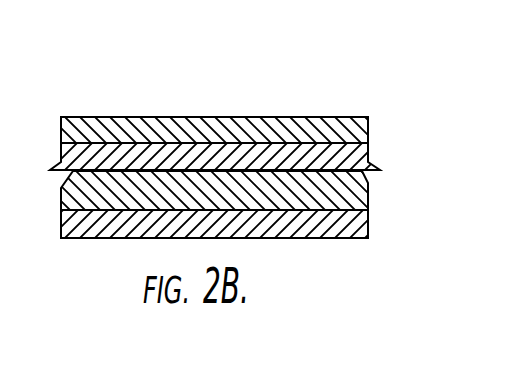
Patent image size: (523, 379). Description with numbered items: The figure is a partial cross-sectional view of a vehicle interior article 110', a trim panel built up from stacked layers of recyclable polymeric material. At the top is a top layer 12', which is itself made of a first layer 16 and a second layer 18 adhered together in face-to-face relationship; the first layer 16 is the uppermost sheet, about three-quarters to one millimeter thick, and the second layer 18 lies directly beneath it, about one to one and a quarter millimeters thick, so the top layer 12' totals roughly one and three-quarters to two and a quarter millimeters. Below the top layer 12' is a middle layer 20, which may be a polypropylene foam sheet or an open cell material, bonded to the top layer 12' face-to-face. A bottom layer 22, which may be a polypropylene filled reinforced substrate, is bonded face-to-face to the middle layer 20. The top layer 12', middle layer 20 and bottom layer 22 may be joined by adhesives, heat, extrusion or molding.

The vehicle interior article 110' is at (329, 46).
The top layer 12' is at (374, 70).
The first layer 16 is at (368, 117).
The second layer 18 is at (358, 157).
The middle layer 20 is at (360, 197).
The bottom layer 22 is at (368, 237).